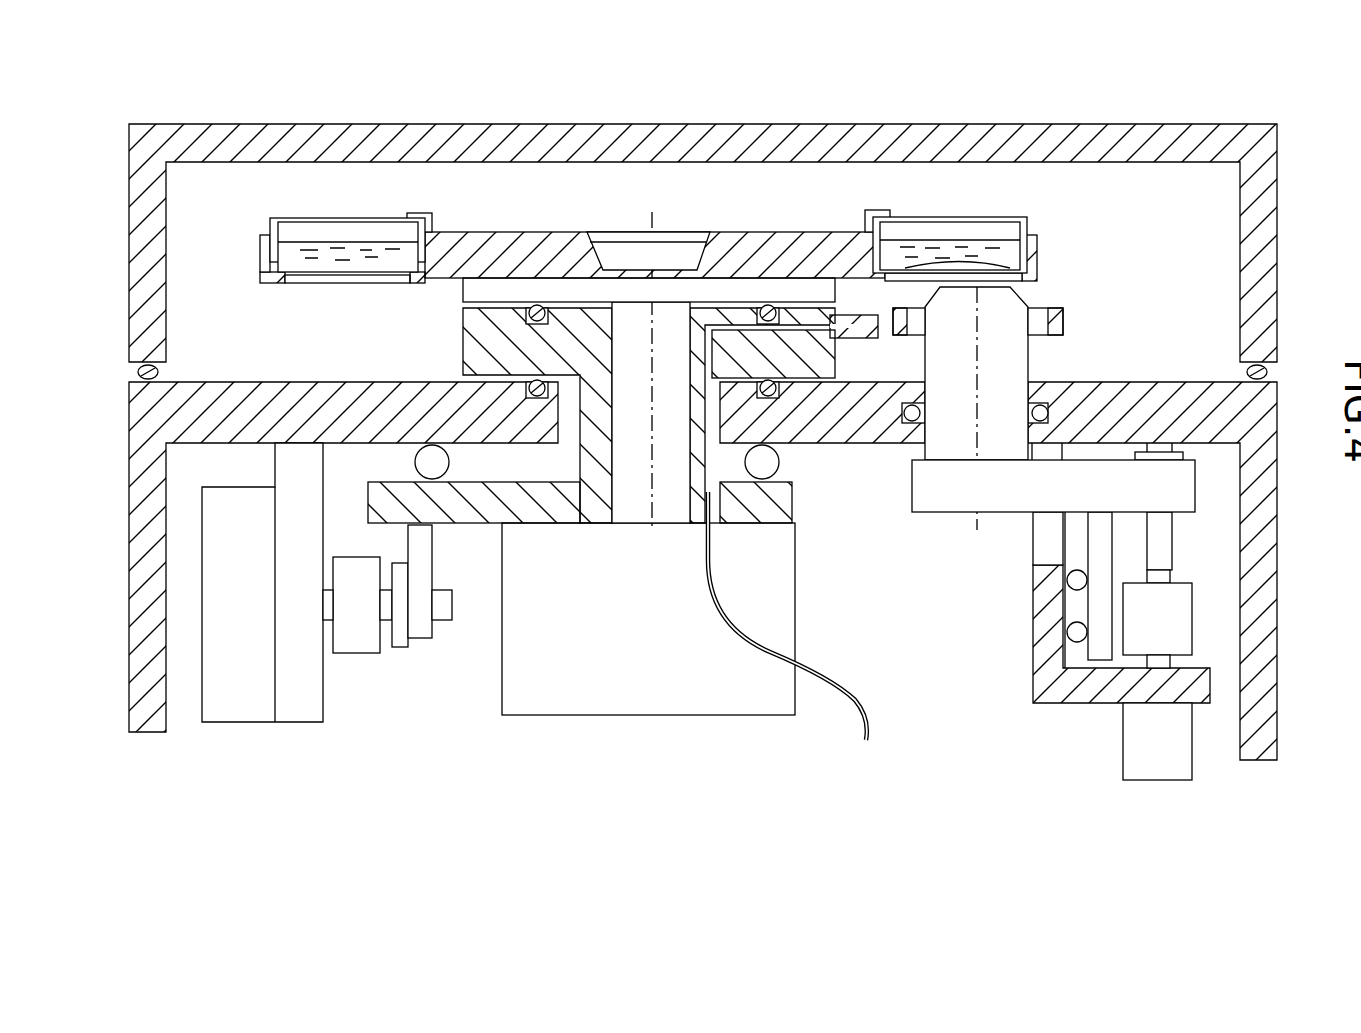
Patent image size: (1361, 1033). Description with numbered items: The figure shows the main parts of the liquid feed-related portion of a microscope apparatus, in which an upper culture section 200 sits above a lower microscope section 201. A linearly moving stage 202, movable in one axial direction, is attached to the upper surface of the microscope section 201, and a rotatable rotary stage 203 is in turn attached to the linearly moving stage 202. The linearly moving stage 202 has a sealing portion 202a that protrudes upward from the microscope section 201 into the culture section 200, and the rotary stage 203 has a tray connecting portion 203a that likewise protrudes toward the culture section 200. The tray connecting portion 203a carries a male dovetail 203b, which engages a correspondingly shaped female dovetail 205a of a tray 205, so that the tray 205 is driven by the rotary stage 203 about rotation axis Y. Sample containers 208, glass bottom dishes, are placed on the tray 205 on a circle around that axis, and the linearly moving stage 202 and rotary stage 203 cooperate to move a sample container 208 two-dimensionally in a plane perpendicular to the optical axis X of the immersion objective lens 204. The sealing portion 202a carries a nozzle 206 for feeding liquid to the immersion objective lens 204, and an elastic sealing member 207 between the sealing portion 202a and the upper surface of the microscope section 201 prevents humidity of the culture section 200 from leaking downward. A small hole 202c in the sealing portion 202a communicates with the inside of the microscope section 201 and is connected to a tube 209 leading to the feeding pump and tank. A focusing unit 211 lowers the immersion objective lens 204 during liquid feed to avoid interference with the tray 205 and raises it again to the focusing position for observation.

The culture section 200 is at (97, 128).
The microscope section 201 is at (97, 388).
The linearly moving stage 202 is at (467, 523).
The sealing portion 202a is at (463, 353).
The small hole 202c is at (718, 505).
The rotary stage 203 is at (630, 517).
The tray connecting portion 203a is at (786, 290).
The male dovetail 203b is at (700, 238).
The immersion objective lens 204 is at (1025, 352).
The tray 205 is at (498, 242).
The female dovetail 205a is at (590, 260).
The nozzle 206 is at (858, 312).
The elastic sealing member 207 is at (766, 395).
The sample container 208 is at (336, 222).
The tube 209 is at (836, 690).
The focusing unit 211 is at (1026, 512).